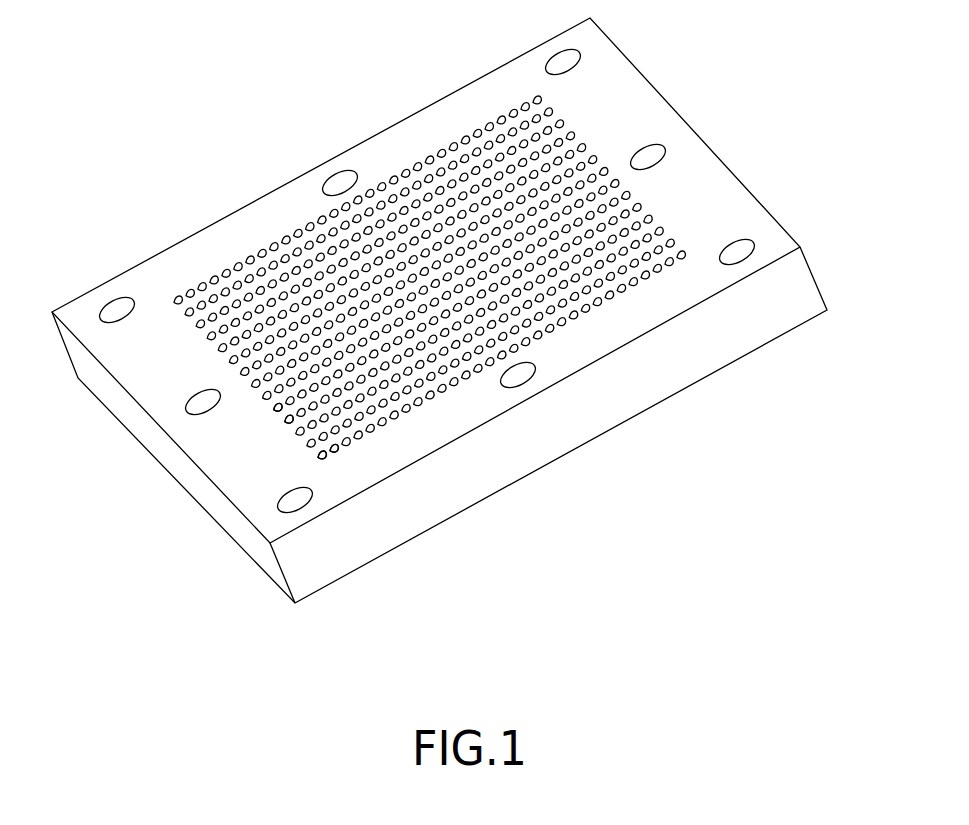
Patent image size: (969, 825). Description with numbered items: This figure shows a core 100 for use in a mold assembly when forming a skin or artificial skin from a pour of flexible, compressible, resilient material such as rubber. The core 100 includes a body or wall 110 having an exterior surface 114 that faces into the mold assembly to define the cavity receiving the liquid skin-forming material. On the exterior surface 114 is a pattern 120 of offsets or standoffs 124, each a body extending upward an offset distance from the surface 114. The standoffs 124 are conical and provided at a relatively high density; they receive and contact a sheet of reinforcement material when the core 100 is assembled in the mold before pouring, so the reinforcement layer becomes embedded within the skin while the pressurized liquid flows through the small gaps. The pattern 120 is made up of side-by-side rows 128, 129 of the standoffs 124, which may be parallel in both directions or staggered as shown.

The core 100 is at (463, 310).
The body 110 is at (463, 310).
The exterior surface 114 is at (697, 167).
The pattern of standoffs 120 is at (462, 128).
The standoff 124 is at (287, 423).
The row of standoffs 128 is at (328, 463).
The row of standoffs 129 is at (341, 456).